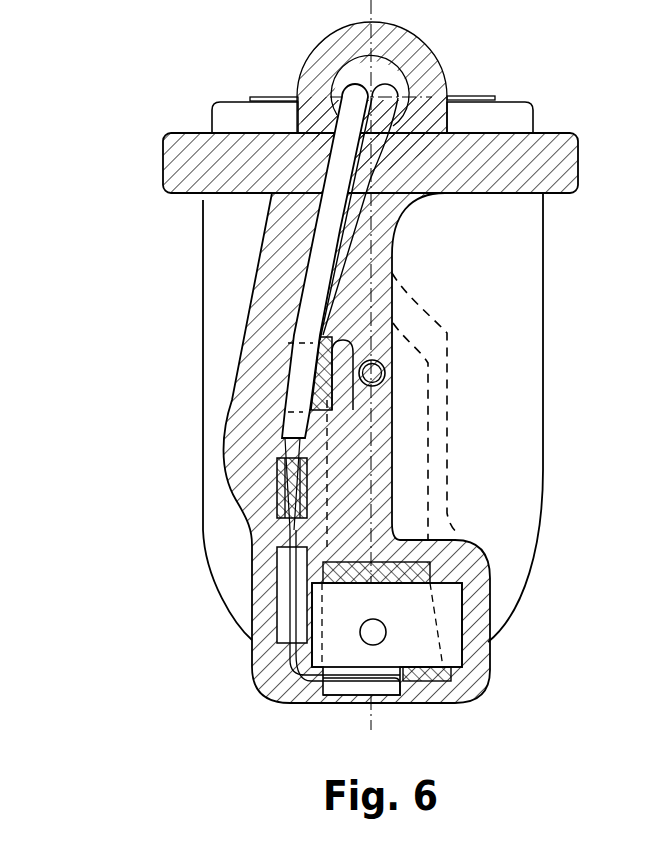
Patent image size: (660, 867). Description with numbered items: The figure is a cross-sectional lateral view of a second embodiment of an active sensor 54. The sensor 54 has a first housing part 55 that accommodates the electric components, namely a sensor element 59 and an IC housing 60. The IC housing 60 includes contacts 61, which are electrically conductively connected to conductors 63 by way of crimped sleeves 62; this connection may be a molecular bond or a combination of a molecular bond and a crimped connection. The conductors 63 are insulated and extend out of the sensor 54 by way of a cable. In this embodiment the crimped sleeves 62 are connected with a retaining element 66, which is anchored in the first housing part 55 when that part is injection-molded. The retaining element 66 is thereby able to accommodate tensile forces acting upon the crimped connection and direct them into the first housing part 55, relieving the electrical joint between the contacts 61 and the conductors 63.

The active sensor 54 is at (499, 70).
The first housing part 55 is at (413, 420).
The sensor element 59 is at (337, 687).
The IC housing 60 is at (283, 598).
The contacts 61 is at (300, 533).
The crimped sleeves 62 is at (280, 479).
The conductors 63 is at (283, 443).
The retaining element 66 is at (345, 357).